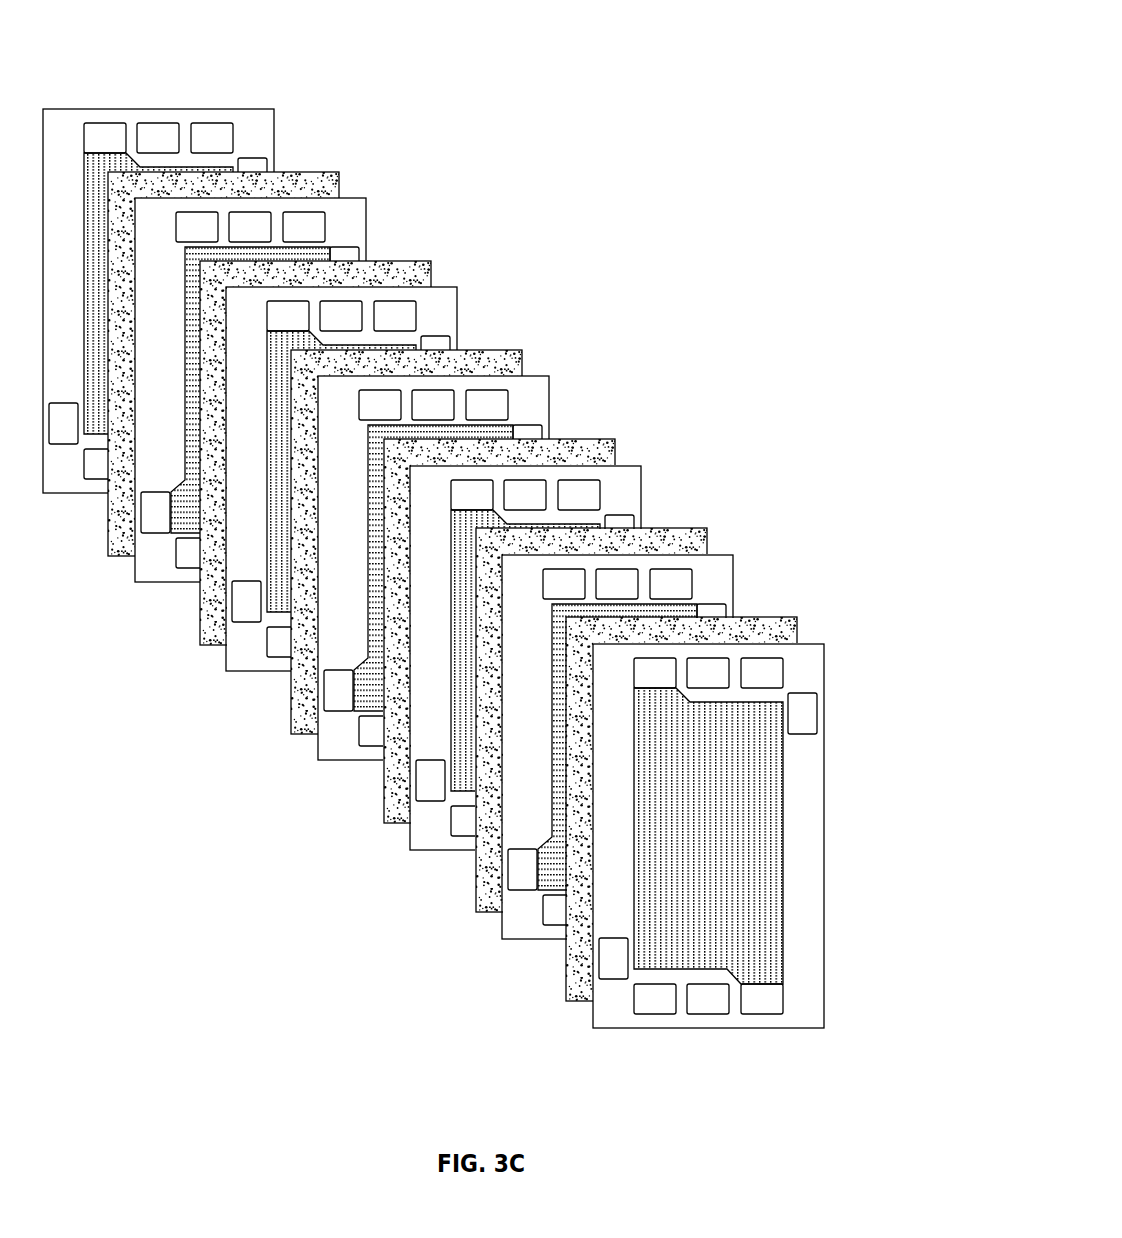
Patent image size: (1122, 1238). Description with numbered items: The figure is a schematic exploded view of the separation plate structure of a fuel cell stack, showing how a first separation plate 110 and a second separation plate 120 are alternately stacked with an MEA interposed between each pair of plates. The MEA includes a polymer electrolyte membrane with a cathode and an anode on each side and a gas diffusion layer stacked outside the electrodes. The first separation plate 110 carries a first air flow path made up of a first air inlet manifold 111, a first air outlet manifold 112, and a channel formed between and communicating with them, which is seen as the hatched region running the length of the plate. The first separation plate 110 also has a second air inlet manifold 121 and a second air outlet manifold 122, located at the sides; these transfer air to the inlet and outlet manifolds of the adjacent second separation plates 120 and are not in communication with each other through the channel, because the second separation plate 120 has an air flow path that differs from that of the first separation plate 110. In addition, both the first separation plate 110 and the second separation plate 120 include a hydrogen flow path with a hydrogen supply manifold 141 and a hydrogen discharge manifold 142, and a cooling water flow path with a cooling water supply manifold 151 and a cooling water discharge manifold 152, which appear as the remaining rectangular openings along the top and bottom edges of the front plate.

The first separation plate 110 is at (504, 578).
The second separation plate 120 is at (378, 206).
The element MEA is at (350, 165).
The first air inlet manifold 111 is at (660, 658).
The first air outlet manifold 112 is at (762, 1014).
The second air inlet manifold 121 is at (818, 712).
The second air outlet manifold 122 is at (598, 962).
The hydrogen supply manifold 141 is at (652, 1014).
The hydrogen discharge manifold 142 is at (784, 674).
The cooling water supply manifold 151 is at (728, 659).
The cooling water discharge manifold 152 is at (705, 1014).